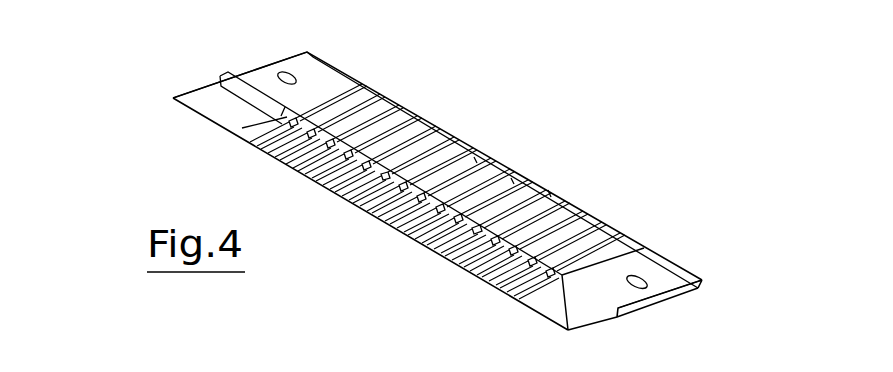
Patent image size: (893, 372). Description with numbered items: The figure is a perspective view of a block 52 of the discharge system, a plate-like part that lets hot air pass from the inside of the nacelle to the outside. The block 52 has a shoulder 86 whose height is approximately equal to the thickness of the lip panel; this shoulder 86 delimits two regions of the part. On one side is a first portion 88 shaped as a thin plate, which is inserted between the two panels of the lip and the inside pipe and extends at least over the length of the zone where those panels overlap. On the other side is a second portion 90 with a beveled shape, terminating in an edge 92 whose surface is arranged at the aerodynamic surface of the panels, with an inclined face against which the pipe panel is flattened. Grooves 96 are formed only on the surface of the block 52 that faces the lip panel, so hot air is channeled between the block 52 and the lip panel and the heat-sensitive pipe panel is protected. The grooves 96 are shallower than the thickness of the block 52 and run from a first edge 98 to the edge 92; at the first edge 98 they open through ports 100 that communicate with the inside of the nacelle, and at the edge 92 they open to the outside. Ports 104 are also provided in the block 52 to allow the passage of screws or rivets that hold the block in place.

The block 52 is at (180, 78).
The shoulder 86 is at (247, 128).
The first portion 88 is at (623, 240).
The second beveled-shape portion 90 is at (203, 86).
The edge 92 is at (226, 116).
The grooves 96 is at (550, 194).
The first edge 98 is at (683, 268).
The ports 100 is at (472, 147).
The ports 104 is at (262, 80).